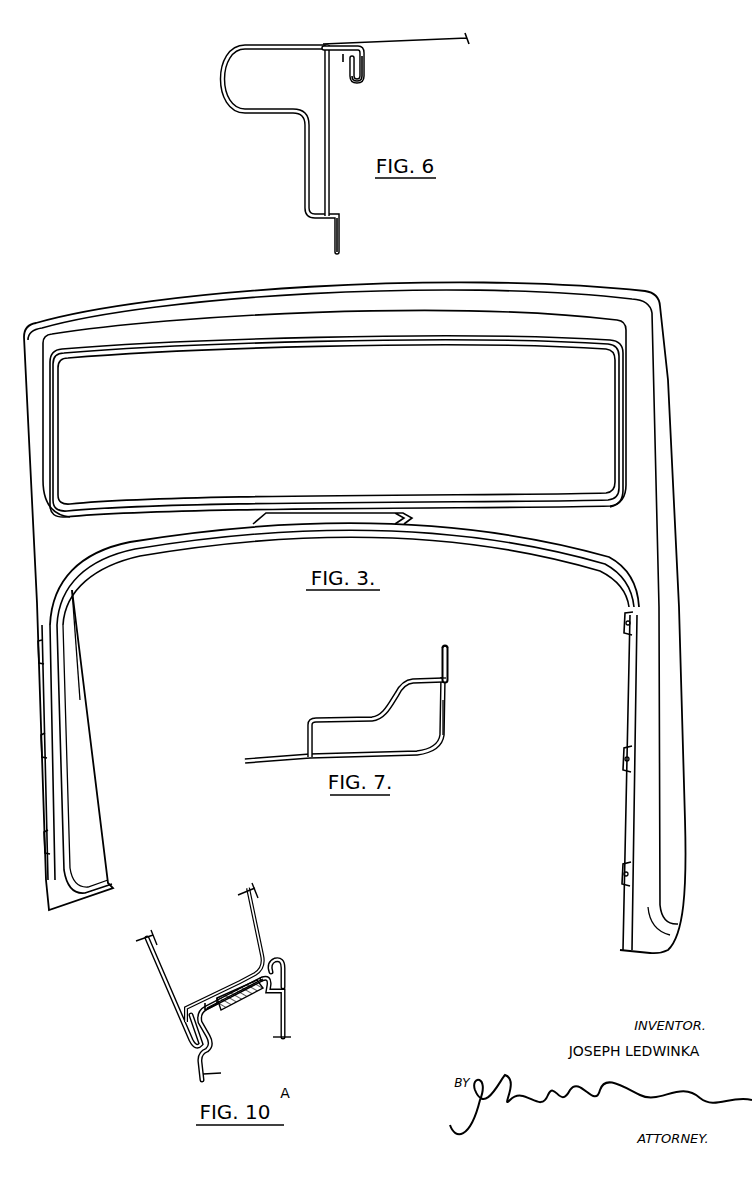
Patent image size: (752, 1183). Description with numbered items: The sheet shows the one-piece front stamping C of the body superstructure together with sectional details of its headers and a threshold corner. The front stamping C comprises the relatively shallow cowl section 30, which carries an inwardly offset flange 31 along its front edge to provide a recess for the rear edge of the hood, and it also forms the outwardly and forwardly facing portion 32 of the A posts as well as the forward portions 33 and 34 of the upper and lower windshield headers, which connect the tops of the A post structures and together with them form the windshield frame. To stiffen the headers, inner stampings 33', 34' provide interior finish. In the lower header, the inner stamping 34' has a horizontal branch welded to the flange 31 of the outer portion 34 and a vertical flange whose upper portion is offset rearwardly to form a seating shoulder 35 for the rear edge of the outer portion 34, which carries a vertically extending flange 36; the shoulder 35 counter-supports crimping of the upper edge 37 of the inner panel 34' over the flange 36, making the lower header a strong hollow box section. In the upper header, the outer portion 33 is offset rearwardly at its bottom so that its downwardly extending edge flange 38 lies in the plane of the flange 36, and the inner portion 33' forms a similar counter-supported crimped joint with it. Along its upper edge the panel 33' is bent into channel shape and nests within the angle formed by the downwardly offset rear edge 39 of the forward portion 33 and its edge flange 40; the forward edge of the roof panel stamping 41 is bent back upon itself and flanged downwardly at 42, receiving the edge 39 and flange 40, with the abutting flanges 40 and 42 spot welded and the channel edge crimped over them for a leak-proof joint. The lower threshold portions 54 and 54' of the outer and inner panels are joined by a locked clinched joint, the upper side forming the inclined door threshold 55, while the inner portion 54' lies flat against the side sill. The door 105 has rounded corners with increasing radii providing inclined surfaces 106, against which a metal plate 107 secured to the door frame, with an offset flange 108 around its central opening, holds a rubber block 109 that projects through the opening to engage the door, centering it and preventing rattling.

In FIG. 3, the front stamping C is at (368, 600).
In FIG. 3, the cowl section 30 is at (657, 713).
In FIG. 7, the cowl section 30 is at (308, 729).
In FIG. 3, the inwardly offset flange 31 is at (642, 817).
In FIG. 3, the outwardly and forwardly facing portion of the A posts 32 is at (661, 545).
In FIG. 6, the forward portion of the upper windshield header 33 is at (271, 149).
In FIG. 3, the forward portion of the upper windshield header 33 is at (334, 414).
In FIG. 6, the inner stamping of the upper header 33' is at (352, 130).
In FIG. 3, the forward portion of the lower windshield header 34 is at (344, 544).
In FIG. 7, the forward portion of the lower windshield header 34 is at (376, 718).
In FIG. 7, the inner stamping of the lower header 34' is at (464, 725).
In FIG. 7, the seating shoulder 35 is at (447, 683).
In FIG. 7, the vertically extending flange 36 is at (451, 662).
In FIG. 7, the upper edge of the inner panel 37 is at (449, 645).
In FIG. 6, the edge flange / channel 38 is at (344, 54).
In FIG. 6, the downwardly offset rear edge 39 is at (334, 42).
In FIG. 6, the edge flange 40 is at (365, 79).
In FIG. 6, the roof panel stamping 41 is at (396, 26).
In FIG. 6, the downward flange of the roof panel 42 is at (365, 66).
In FIG. 10A, the lower threshold portion of the outer panel 54 is at (212, 1033).
In FIG. 10A, the lower threshold portion of the inner panel 54' is at (293, 1007).
In FIG. 10A, the threshold 55 is at (243, 1000).
In FIG. 10A, the door 105 is at (156, 942).
In FIG. 10A, the inclined surfaces 106 is at (268, 972).
In FIG. 10A, the metal plate 107 is at (284, 969).
In FIG. 10A, the offset flange 108 is at (212, 995).
In FIG. 10A, the rubber block 109 is at (237, 980).